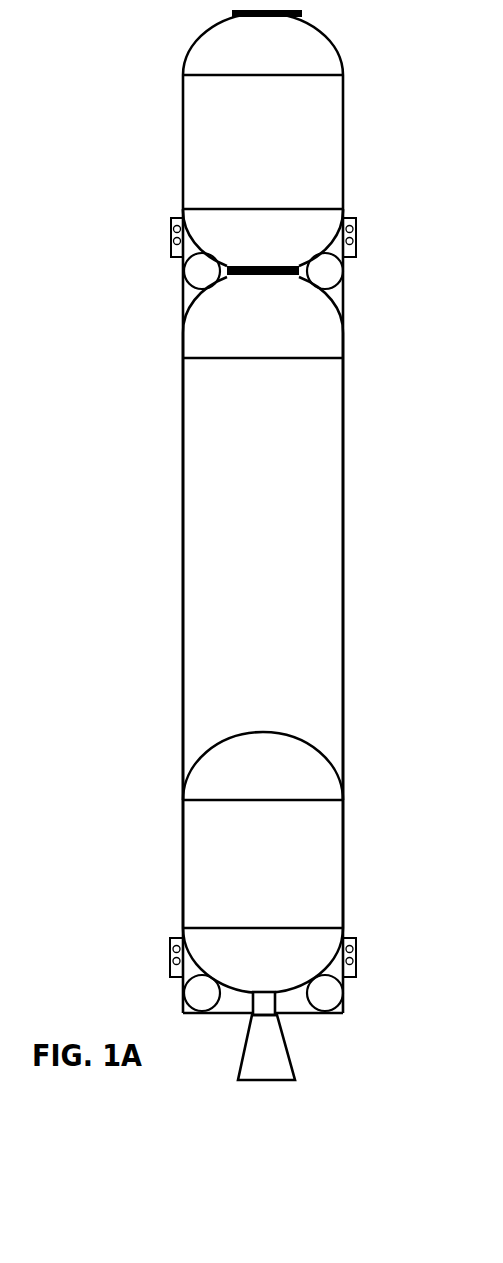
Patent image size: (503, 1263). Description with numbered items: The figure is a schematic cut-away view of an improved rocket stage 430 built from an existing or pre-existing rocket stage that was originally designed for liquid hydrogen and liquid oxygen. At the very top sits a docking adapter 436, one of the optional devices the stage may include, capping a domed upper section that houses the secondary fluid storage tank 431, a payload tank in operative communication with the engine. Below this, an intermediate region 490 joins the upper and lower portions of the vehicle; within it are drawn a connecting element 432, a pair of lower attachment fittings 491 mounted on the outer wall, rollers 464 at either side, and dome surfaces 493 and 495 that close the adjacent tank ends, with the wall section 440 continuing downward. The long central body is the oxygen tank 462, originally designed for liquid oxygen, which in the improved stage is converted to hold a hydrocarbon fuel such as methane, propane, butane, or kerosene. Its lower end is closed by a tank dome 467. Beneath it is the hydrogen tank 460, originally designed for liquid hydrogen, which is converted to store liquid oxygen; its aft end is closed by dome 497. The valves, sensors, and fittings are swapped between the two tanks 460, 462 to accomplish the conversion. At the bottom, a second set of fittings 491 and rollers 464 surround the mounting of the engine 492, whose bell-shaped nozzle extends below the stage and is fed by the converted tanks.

The launch vehicle 430 is at (156, 42).
The docking adapter 436 is at (302, 14).
The secondary fluid storage tank 431 is at (345, 152).
The stage separation system 490 is at (159, 196).
The separation latch 491 is at (170, 230).
The roller 464 is at (182, 274).
The upper stage 440 is at (183, 308).
The separation plane connector 432 is at (258, 266).
The upper stage tank dome 493 is at (270, 277).
The interstage skirt 495 is at (345, 305).
The oxygen tank 462 is at (345, 558).
The tank dome 467 is at (340, 750).
The hydrogen tank 460 is at (345, 866).
The aft tank dome 497 is at (345, 930).
The engine 492 is at (295, 1078).